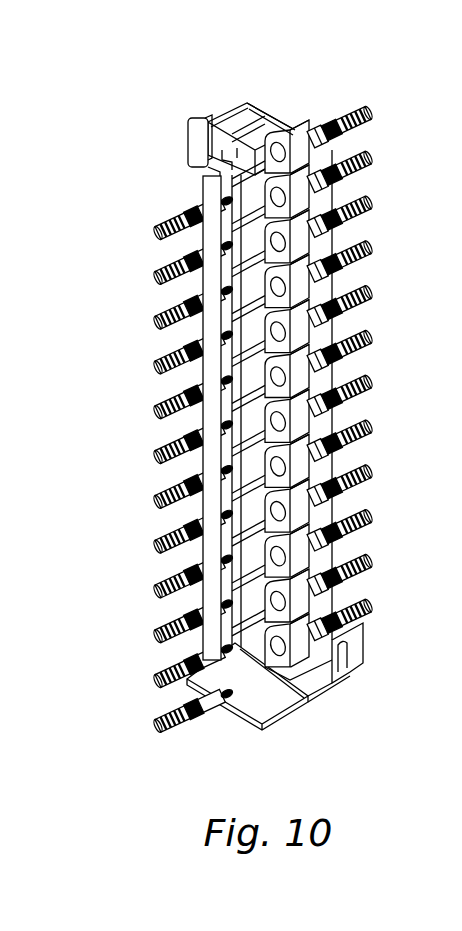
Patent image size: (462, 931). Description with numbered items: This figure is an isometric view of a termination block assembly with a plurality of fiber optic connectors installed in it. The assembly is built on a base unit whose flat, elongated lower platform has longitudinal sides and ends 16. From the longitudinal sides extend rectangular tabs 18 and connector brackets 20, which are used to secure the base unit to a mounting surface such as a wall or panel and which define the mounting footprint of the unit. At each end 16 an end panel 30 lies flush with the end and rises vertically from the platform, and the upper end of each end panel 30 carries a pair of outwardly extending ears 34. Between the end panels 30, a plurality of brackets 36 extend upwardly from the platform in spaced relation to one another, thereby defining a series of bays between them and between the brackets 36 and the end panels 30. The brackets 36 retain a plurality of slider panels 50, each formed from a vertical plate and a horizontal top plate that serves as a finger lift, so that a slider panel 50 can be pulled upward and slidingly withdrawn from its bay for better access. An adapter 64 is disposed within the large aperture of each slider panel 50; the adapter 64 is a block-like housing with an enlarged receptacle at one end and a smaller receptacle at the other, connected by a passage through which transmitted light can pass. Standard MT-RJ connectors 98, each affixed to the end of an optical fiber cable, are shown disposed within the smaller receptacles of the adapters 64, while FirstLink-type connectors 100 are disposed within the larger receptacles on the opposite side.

The end 16 is at (283, 712).
The rectangular tab 18 is at (342, 194).
The connector bracket 20 is at (355, 672).
The end panel 30 is at (220, 120).
The ear 34 is at (247, 108).
The bracket 36 is at (203, 178).
The slider panel 50 is at (206, 378).
The adapter 64 is at (366, 130).
The MT-RJ connector 98 is at (157, 232).
The connector 100 is at (286, 131).